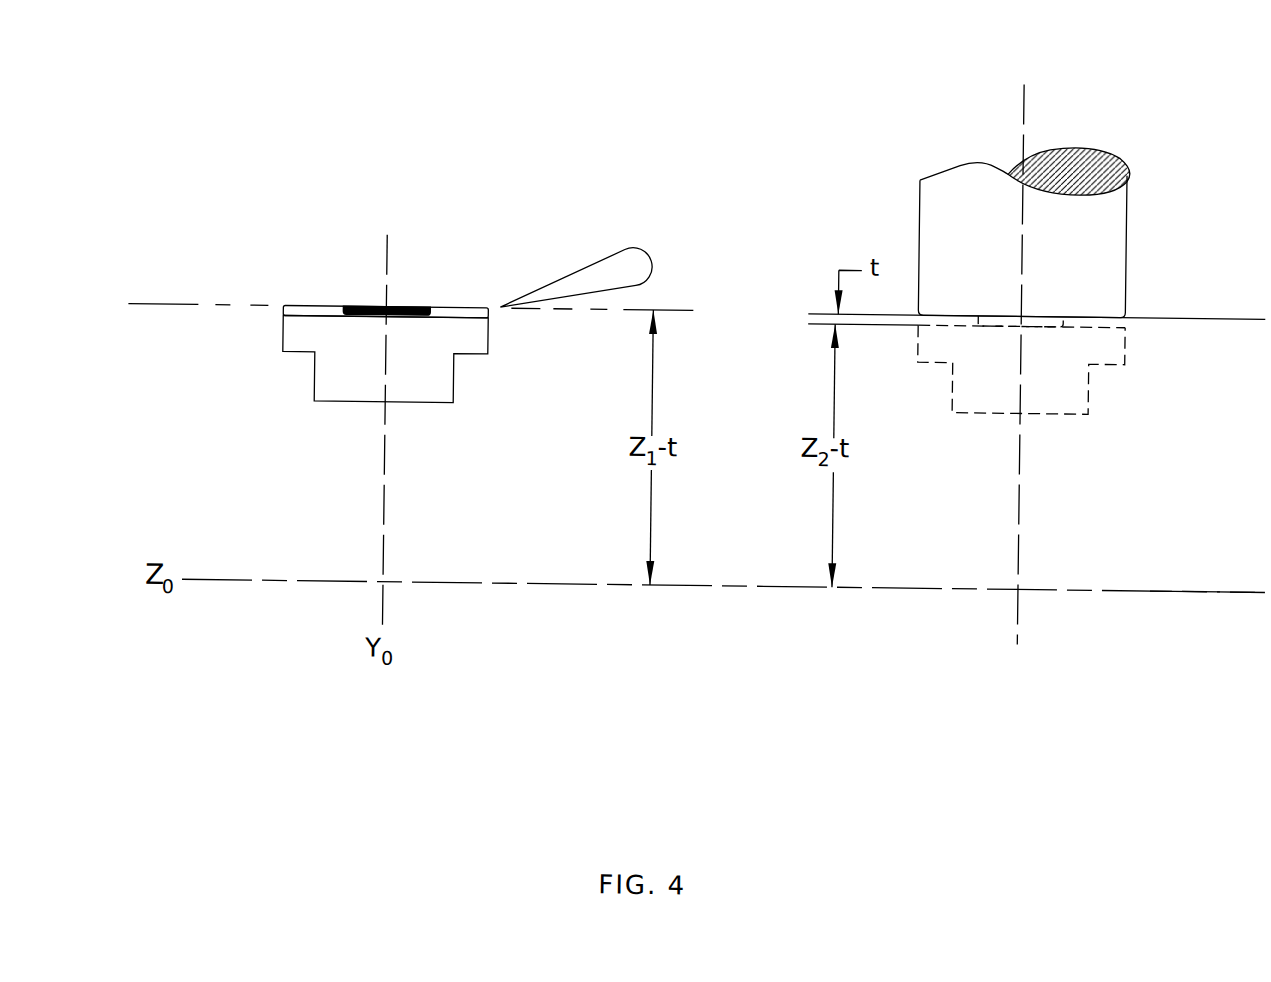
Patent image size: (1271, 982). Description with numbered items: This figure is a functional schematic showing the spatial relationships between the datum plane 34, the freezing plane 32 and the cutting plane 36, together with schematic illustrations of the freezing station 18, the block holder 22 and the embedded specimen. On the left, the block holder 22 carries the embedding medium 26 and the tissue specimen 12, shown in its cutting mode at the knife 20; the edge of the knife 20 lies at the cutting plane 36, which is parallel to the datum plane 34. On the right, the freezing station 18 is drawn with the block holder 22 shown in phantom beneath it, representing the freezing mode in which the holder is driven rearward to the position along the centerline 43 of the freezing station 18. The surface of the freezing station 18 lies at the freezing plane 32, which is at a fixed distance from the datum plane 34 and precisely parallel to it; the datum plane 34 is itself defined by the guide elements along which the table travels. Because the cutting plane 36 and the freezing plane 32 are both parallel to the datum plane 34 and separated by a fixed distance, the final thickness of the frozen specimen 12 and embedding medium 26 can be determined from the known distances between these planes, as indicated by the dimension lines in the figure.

The specimen 12 is at (365, 308).
The freezing station 18 is at (960, 161).
The knife 20 is at (574, 269).
The block holder 22 is at (311, 381).
The embedding medium 26 is at (304, 309).
The freezing plane 32 is at (1036, 306).
The datum plane 34 is at (1207, 577).
The cutting plane 36 is at (410, 291).
The centerline of freezing station 43 is at (1019, 500).